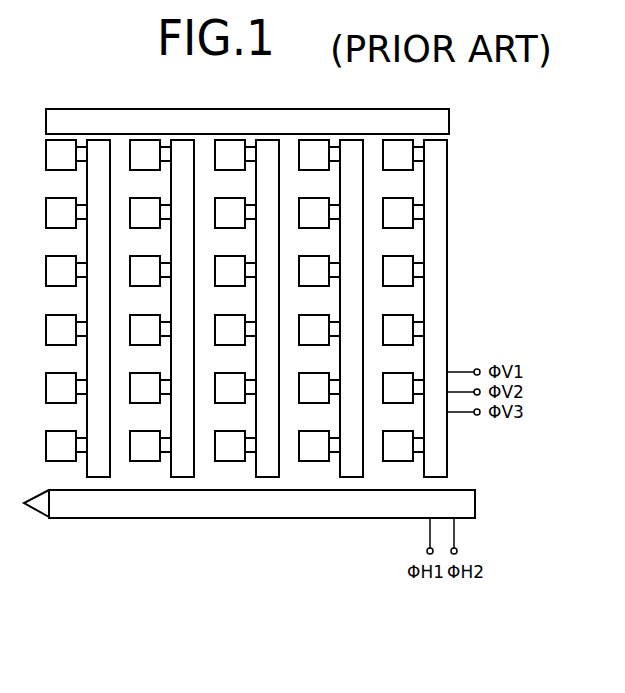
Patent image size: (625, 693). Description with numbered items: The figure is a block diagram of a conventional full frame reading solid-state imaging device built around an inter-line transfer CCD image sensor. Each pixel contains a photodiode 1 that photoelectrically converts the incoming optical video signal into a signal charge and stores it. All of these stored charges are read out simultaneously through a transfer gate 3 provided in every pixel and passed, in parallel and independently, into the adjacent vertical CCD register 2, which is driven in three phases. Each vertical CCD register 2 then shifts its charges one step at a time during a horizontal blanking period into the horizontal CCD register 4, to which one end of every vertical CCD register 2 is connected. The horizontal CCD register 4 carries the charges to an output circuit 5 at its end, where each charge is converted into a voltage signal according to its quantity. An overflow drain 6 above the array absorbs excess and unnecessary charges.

The photodiode 1 is at (405, 157).
The vertical CCD register 2 is at (438, 272).
The transfer gate 3 is at (418, 215).
The horizontal CCD register 4 is at (447, 502).
The output circuit 5 is at (40, 503).
The overflow drain 6 is at (408, 123).